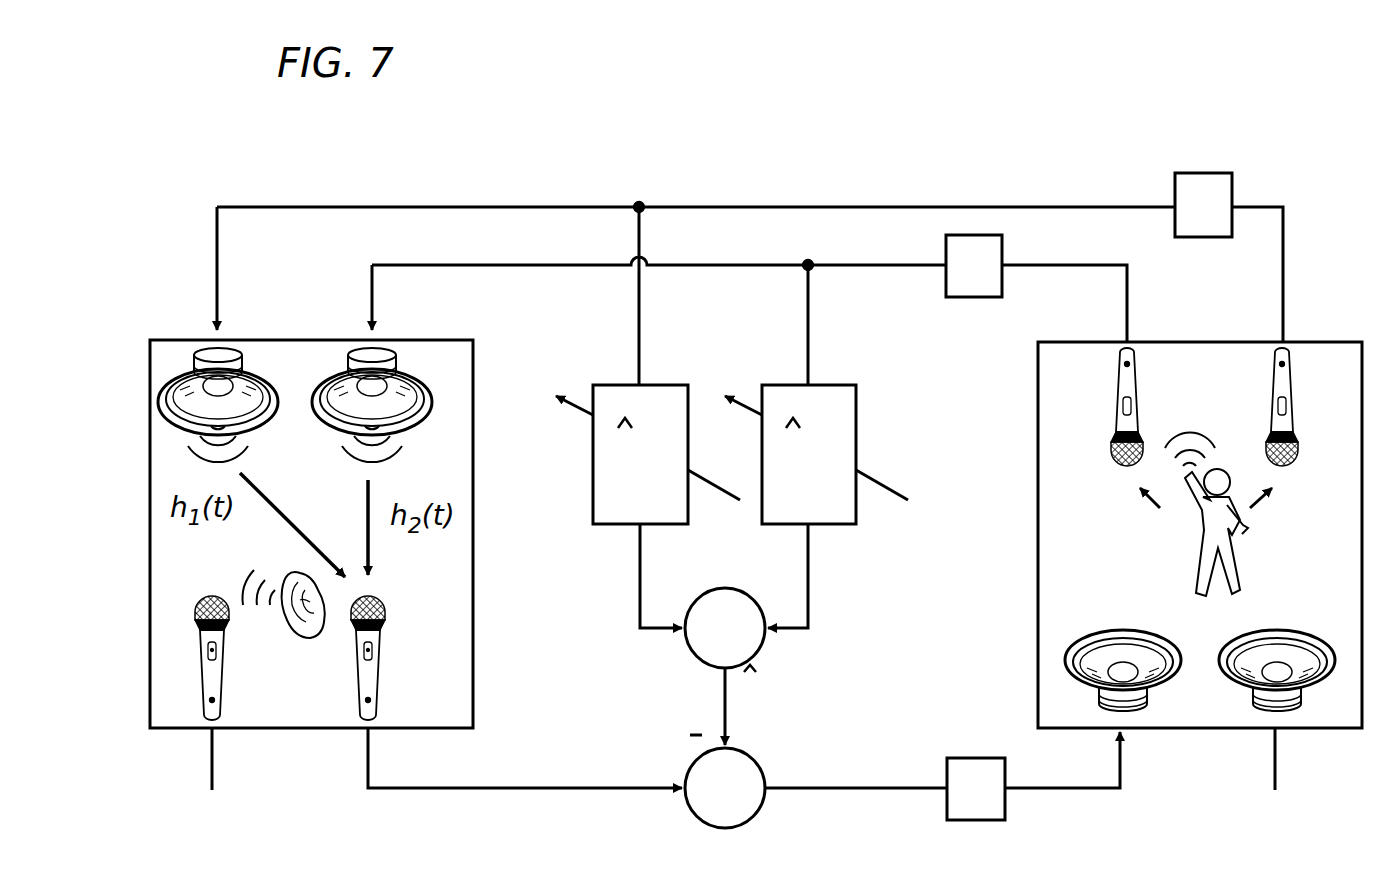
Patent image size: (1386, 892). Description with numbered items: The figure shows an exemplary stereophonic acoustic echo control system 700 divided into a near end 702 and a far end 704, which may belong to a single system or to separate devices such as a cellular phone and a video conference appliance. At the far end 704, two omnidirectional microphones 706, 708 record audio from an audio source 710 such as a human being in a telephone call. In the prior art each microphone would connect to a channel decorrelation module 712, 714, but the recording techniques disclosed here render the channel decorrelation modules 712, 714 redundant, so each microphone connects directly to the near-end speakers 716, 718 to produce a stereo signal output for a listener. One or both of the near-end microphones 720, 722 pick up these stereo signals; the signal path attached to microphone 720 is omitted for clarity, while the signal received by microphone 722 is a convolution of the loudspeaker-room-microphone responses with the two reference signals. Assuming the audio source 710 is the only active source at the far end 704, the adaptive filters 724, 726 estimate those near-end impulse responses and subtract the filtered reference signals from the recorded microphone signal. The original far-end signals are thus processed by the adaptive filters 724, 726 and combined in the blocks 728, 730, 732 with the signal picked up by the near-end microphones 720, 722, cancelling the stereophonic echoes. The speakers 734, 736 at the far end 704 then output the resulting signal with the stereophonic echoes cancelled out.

The stereophonic acoustic echo control system 700 is at (792, 160).
The near end 702 is at (160, 162).
The far end 704 is at (1328, 172).
The omnidirectional microphone 706 is at (1117, 392).
The omnidirectional microphone 708 is at (1275, 392).
The audio source 710 is at (1202, 541).
The channel decorrelation module 712 is at (1200, 173).
The channel decorrelation module 714 is at (970, 297).
The speaker 716 is at (240, 348).
The speaker 718 is at (402, 348).
The microphone 720 is at (220, 665).
The microphone 722 is at (372, 665).
The adaptive filter 724 is at (593, 480).
The adaptive filter 726 is at (856, 418).
The summer 728 is at (720, 588).
The summer 730 is at (756, 760).
The combining block 732 is at (970, 758).
The speaker 734 is at (1115, 632).
The speaker 736 is at (1287, 632).